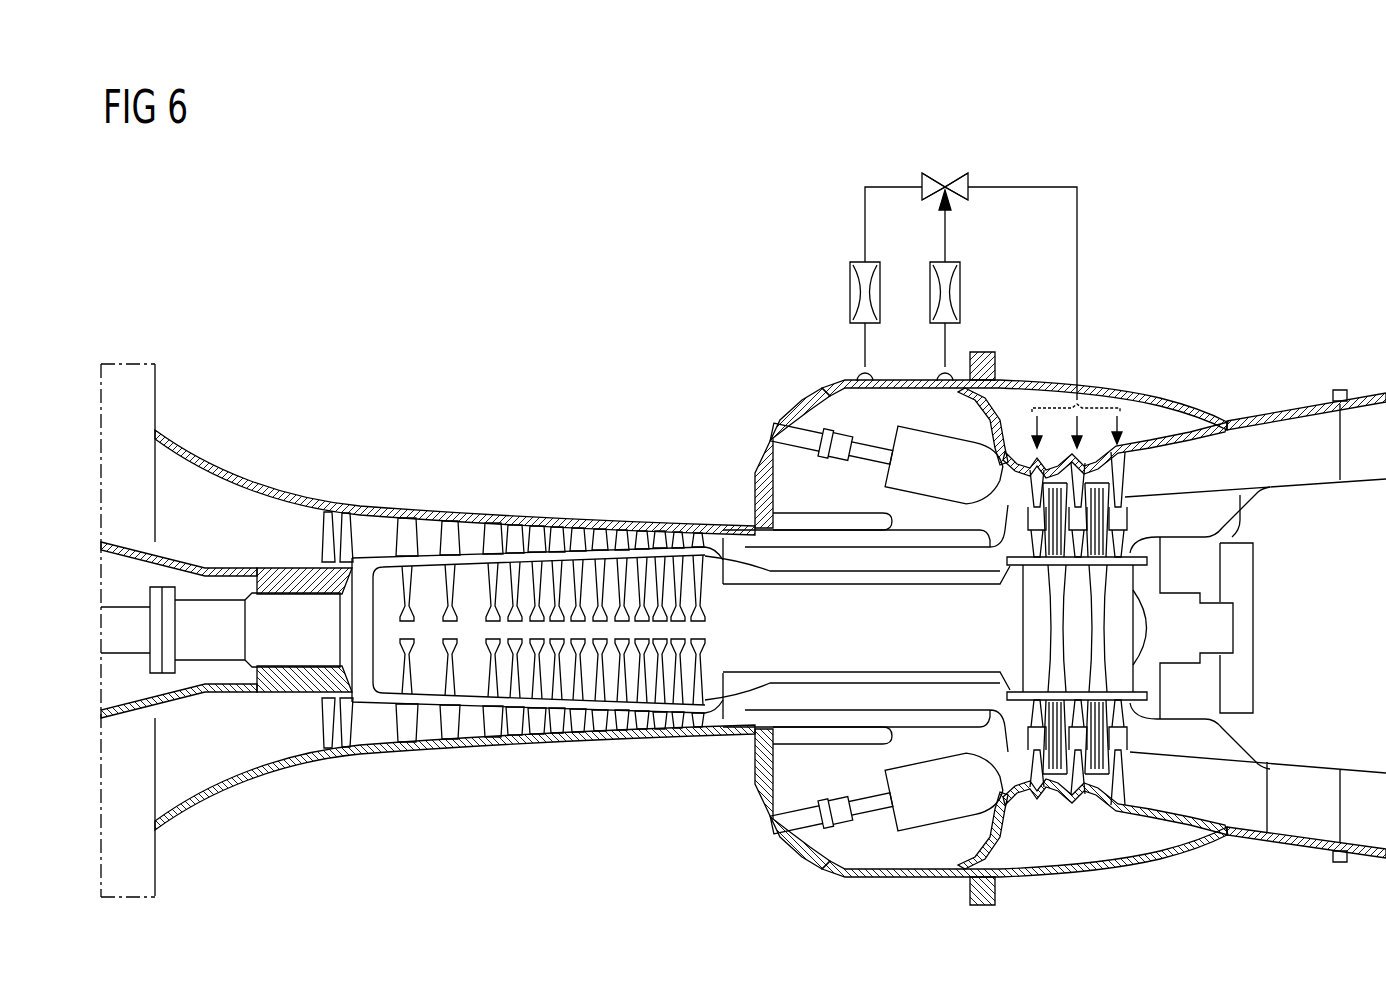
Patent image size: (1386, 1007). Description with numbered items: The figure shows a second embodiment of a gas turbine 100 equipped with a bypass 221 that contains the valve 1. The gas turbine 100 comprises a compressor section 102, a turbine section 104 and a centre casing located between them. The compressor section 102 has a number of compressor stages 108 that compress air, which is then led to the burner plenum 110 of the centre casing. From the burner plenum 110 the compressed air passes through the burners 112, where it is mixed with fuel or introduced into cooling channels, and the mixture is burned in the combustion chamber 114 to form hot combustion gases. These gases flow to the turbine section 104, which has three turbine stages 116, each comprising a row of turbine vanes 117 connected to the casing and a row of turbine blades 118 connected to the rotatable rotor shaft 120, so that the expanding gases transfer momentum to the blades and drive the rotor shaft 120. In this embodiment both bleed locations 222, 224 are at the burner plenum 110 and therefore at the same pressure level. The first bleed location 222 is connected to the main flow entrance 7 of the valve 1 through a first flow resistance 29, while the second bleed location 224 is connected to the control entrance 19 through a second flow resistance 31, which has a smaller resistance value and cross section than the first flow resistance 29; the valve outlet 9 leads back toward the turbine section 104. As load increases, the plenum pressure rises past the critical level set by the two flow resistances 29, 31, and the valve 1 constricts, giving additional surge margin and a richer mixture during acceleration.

The valve 1 is at (943, 173).
The main flow entrance 7 is at (921, 186).
The valve outlet 9 is at (969, 186).
The control entrance 19 is at (952, 193).
The first flow resistance 29 is at (850, 291).
The second flow resistance 31 is at (960, 291).
The gas turbine 100 is at (743, 555).
The compressor section 102 is at (595, 473).
The turbine section 104 is at (1086, 552).
The compressor stages 108 is at (550, 569).
The burner plenum 110 is at (975, 628).
The burners 112 is at (831, 444).
The combustion chamber 114 is at (945, 468).
The turbine stages 116 is at (1064, 432).
The turbine vanes 117 is at (1077, 504).
The turbine blades 118 is at (1076, 520).
The rotor shaft 120 is at (888, 643).
The bypass 221 is at (954, 246).
The first bleed location 222 is at (860, 372).
The second bleed location 224 is at (940, 372).